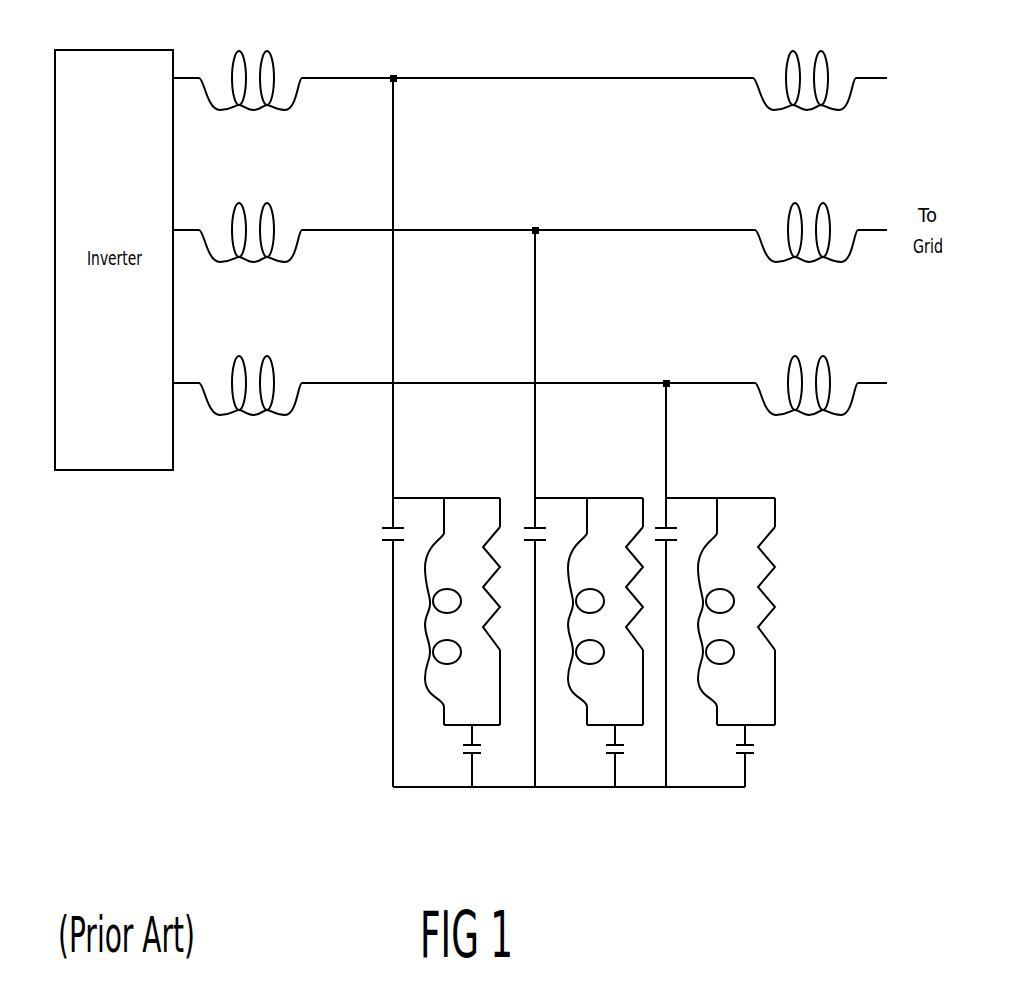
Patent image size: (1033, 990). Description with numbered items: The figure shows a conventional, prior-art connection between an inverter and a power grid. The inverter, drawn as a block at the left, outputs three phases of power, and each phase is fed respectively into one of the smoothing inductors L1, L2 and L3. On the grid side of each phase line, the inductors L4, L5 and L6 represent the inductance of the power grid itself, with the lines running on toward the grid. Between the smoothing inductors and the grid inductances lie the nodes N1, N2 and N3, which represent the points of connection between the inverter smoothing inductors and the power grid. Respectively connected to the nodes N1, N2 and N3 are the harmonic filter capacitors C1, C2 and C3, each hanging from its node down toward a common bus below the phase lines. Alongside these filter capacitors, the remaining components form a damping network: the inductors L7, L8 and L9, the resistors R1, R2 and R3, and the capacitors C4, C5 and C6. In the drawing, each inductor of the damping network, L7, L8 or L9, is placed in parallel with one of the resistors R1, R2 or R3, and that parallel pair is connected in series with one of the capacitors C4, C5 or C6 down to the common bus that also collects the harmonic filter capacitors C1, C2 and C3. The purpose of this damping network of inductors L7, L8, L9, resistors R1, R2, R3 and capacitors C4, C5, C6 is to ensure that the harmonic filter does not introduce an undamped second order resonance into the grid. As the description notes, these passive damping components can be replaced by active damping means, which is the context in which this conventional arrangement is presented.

The smoothing inductor L1 is at (250, 61).
The smoothing inductor L2 is at (250, 214).
The smoothing inductor L3 is at (250, 373).
The power grid inductance L4 is at (804, 61).
The power grid inductance L5 is at (806, 213).
The power grid inductance L6 is at (806, 364).
The node N1 is at (393, 76).
The node N2 is at (535, 228).
The node N3 is at (666, 381).
The harmonic filter capacitor C1 is at (383, 520).
The harmonic filter capacitor C2 is at (528, 520).
The harmonic filter capacitor C3 is at (661, 520).
The inductor L7 is at (434, 611).
The inductor L8 is at (574, 611).
The inductor L9 is at (707, 611).
The resistor R1 is at (500, 611).
The resistor R2 is at (643, 611).
The resistor R3 is at (774, 611).
The capacitor C4 is at (485, 756).
The capacitor C5 is at (628, 756).
The capacitor C6 is at (758, 756).